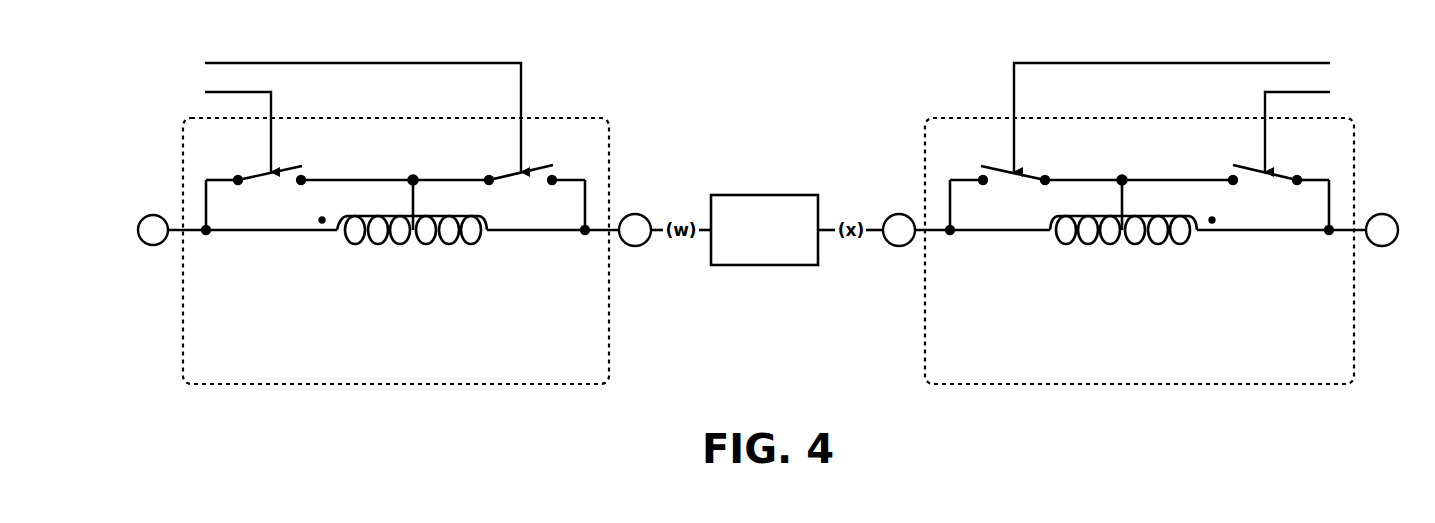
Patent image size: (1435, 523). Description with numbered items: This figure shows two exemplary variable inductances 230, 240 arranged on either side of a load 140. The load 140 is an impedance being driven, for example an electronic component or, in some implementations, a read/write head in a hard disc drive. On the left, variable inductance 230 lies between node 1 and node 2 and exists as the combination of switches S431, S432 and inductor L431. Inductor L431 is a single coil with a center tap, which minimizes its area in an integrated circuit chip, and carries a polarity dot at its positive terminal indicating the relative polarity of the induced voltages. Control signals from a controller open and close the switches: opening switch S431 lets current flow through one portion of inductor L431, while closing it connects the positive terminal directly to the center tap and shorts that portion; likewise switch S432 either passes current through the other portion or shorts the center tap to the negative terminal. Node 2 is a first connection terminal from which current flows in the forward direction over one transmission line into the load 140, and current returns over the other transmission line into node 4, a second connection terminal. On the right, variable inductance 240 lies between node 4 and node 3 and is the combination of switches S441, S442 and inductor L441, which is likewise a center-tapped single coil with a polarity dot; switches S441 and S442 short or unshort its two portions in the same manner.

The variable inductance 230 is at (367, 218).
The variable inductance 240 is at (1167, 218).
The load 140 is at (764, 230).
The switch S431 is at (270, 189).
The switch S432 is at (521, 189).
The inductor L431 is at (412, 225).
The switch S441 is at (1265, 189).
The switch S442 is at (1014, 189).
The inductor L441 is at (1123, 225).
The node 1 is at (153, 230).
The node 2 is at (635, 230).
The node 3 is at (1382, 230).
The node 4 is at (899, 230).